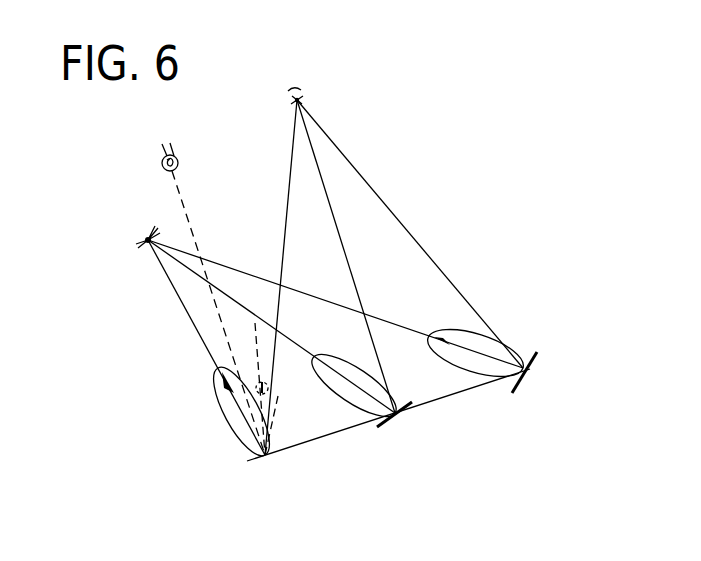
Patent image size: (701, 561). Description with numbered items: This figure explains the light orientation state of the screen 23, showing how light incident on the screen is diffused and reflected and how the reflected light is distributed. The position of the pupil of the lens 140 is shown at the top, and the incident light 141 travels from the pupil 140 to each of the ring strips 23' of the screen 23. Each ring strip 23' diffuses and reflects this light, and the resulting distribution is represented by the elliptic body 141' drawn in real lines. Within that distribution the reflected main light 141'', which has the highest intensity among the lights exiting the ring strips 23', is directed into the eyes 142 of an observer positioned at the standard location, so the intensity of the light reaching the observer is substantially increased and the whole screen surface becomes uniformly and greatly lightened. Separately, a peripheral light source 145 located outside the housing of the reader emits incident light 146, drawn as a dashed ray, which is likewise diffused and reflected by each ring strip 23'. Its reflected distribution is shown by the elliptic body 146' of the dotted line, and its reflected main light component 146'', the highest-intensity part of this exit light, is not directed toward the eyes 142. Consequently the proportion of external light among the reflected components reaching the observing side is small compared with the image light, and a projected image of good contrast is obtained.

The pupil of the lens 140 is at (302, 95).
The incident light 141 is at (394, 277).
The elliptic body 141' is at (337, 363).
The reflected main light 141'' is at (341, 347).
The eyes of an observer 142 is at (140, 238).
The peripheral light source 145 is at (179, 160).
The incident light from the external light source 146 is at (218, 313).
The elliptic body of the dotted line 146' is at (301, 425).
The reflected main light component 146'' is at (282, 389).
The screen 23 is at (388, 422).
The ring strips 23' is at (556, 372).